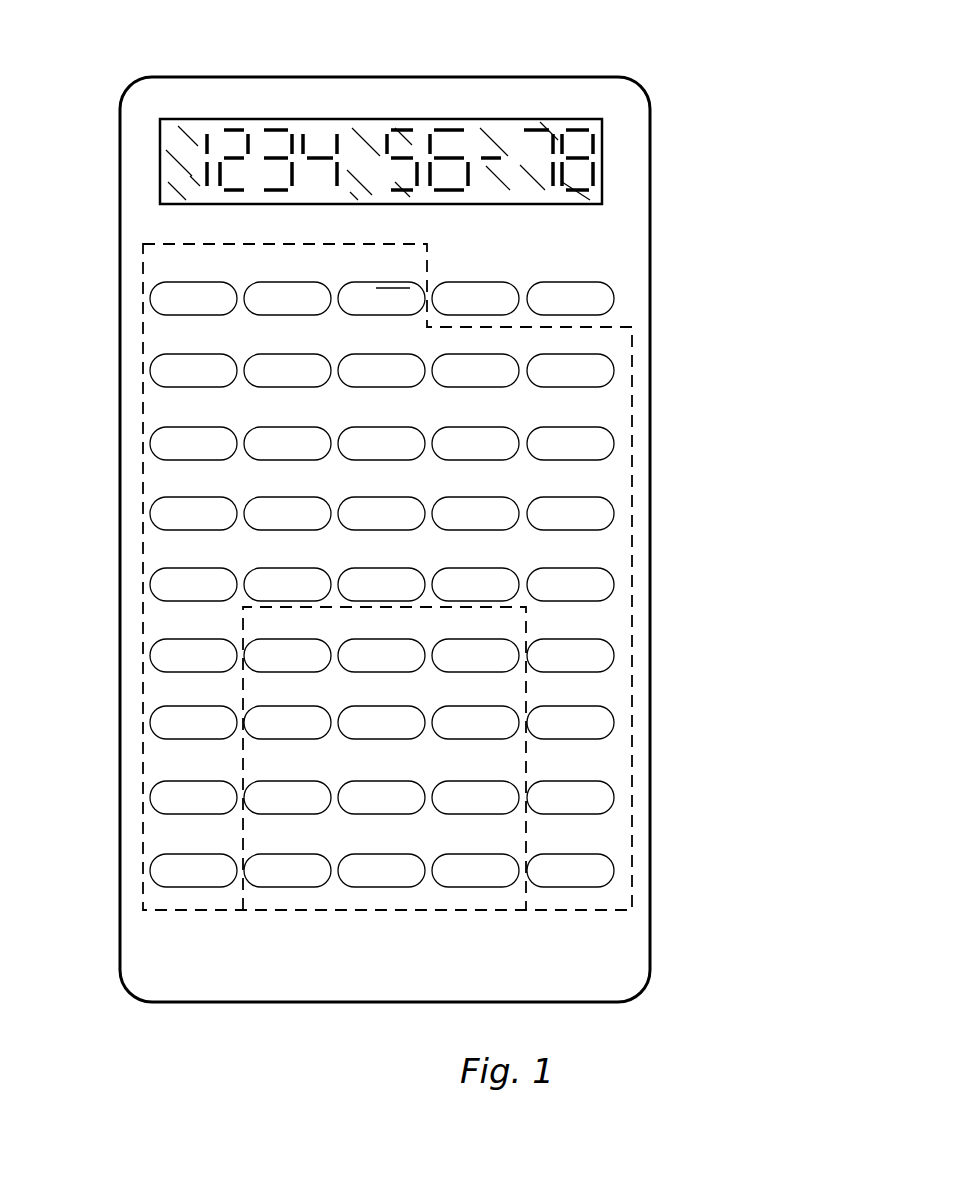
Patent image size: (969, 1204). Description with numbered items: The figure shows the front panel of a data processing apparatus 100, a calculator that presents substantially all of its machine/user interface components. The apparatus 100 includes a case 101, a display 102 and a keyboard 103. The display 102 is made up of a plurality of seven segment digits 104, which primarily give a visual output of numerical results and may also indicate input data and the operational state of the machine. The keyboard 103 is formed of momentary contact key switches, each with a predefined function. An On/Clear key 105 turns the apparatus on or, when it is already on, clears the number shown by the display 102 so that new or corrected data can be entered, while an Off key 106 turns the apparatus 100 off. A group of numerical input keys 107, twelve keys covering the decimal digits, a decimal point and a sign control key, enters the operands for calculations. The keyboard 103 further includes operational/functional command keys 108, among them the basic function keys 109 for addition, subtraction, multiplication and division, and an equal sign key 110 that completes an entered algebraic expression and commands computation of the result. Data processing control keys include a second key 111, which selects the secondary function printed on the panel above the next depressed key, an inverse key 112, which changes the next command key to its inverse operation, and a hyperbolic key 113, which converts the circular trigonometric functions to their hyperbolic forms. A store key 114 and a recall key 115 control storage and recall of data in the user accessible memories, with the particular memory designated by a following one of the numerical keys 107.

The data processing apparatus 100 is at (664, 58).
The case 101 is at (239, 84).
The display 102 is at (474, 127).
The keyboard 103 is at (640, 545).
The seven segment digits 104 is at (213, 122).
The On/Clear key 105 is at (620, 290).
The Off key 106 is at (500, 284).
The numerical input keys 107 is at (335, 910).
The operational/functional command keys 108 is at (632, 440).
The basic function keys 109 is at (620, 585).
The equal sign key 110 is at (620, 870).
The second key 111 is at (150, 298).
The inverse key 112 is at (150, 513).
The hyperbolic key 113 is at (150, 443).
The store key 114 is at (150, 655).
The recall key 115 is at (150, 722).